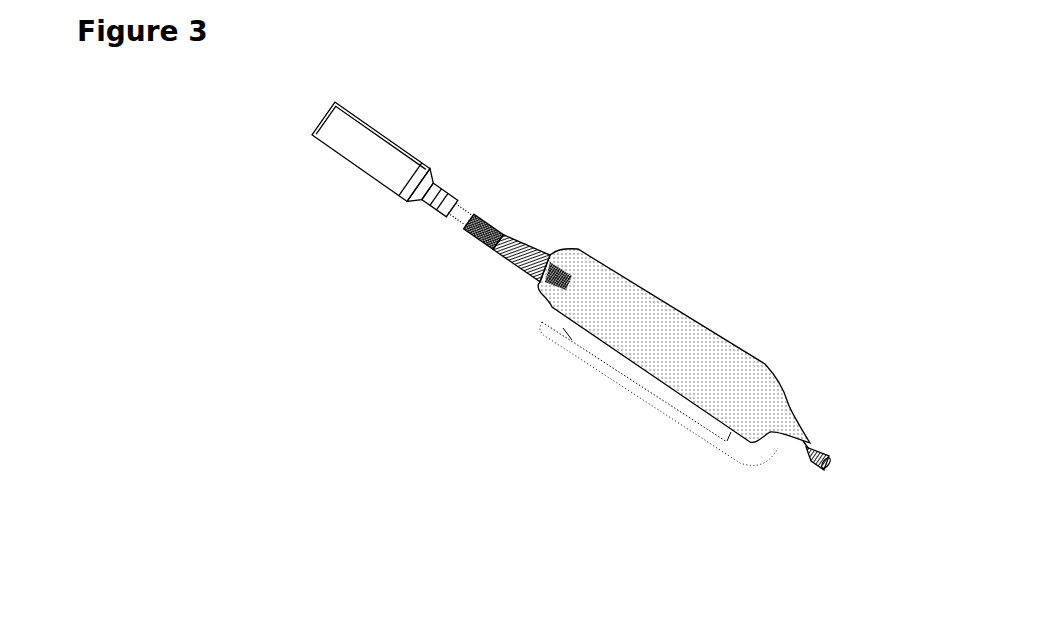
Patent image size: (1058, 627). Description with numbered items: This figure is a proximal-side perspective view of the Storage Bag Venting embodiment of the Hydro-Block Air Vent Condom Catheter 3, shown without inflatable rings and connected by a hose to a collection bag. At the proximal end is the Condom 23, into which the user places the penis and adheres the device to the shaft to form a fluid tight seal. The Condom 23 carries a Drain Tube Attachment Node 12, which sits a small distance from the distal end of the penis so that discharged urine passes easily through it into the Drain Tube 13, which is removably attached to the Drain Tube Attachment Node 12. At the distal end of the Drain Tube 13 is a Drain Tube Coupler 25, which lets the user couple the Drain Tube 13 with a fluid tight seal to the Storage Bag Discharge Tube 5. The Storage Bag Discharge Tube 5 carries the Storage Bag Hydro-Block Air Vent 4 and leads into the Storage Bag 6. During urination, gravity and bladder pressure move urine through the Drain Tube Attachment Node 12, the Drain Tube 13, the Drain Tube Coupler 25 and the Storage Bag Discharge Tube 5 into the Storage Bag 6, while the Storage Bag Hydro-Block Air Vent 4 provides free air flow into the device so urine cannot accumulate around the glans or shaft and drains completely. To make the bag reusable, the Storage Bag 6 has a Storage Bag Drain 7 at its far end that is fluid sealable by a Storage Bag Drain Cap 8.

The Storage Bag Venting embodiment of the Hydro-Block Air Vent Condom Catheter 3 is at (414, 211).
The Condom 23 is at (373, 162).
The Drain Tube Attachment Node 12 is at (444, 192).
The Drain Tube 13 is at (464, 208).
The Drain Tube Coupler 25 is at (469, 228).
The Storage Bag Hydro-Block Air Vent 4 is at (497, 243).
The Storage Bag Discharge Tube 5 is at (498, 223).
The Storage Bag 6 is at (690, 349).
The Storage Bag Drain 7 is at (816, 446).
The Storage Bar Drain Cap 8 is at (816, 470).